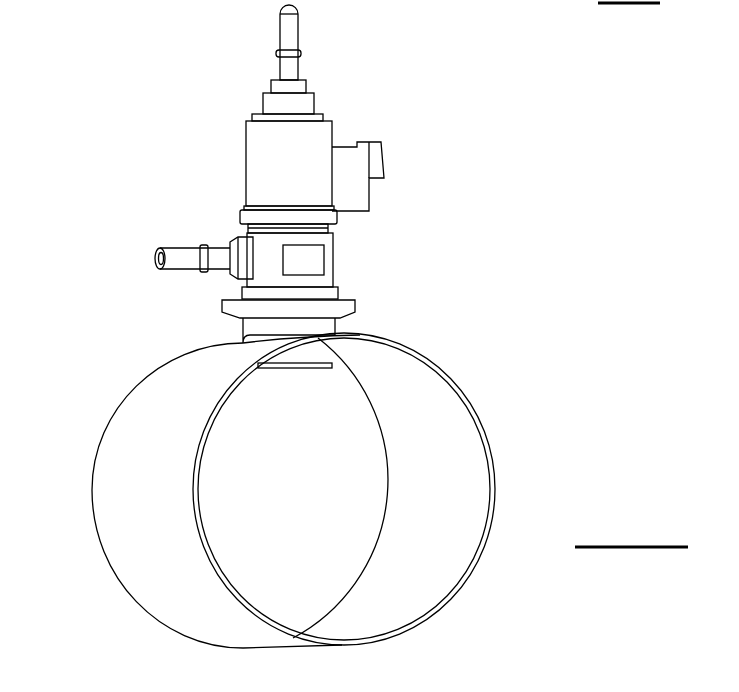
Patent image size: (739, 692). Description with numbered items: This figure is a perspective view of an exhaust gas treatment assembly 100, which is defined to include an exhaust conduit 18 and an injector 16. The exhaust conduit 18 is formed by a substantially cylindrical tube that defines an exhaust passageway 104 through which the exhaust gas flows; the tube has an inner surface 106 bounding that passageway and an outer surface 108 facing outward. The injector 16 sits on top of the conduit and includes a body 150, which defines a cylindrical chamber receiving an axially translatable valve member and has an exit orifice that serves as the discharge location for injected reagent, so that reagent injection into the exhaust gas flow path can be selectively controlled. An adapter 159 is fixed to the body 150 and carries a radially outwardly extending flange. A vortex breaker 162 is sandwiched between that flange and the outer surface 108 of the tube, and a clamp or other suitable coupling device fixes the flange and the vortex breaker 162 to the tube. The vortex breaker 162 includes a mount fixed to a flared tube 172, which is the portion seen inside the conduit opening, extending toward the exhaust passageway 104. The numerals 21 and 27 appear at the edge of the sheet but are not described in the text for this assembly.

The exhaust gas treatment assembly 100 is at (78, 170).
The injector 16 is at (334, 57).
The body 150 is at (243, 152).
The adapter 159 is at (341, 302).
The vortex breaker 162 is at (237, 330).
The exhaust conduit 18 is at (439, 351).
The outer surface 108 is at (127, 427).
The inner surface 106 is at (398, 425).
The exhaust passageway 104 is at (302, 546).
The flared tube 172 is at (292, 362).
The fragment numeral 21 is at (118, 0).
The fragment numeral 27 is at (40, 7).